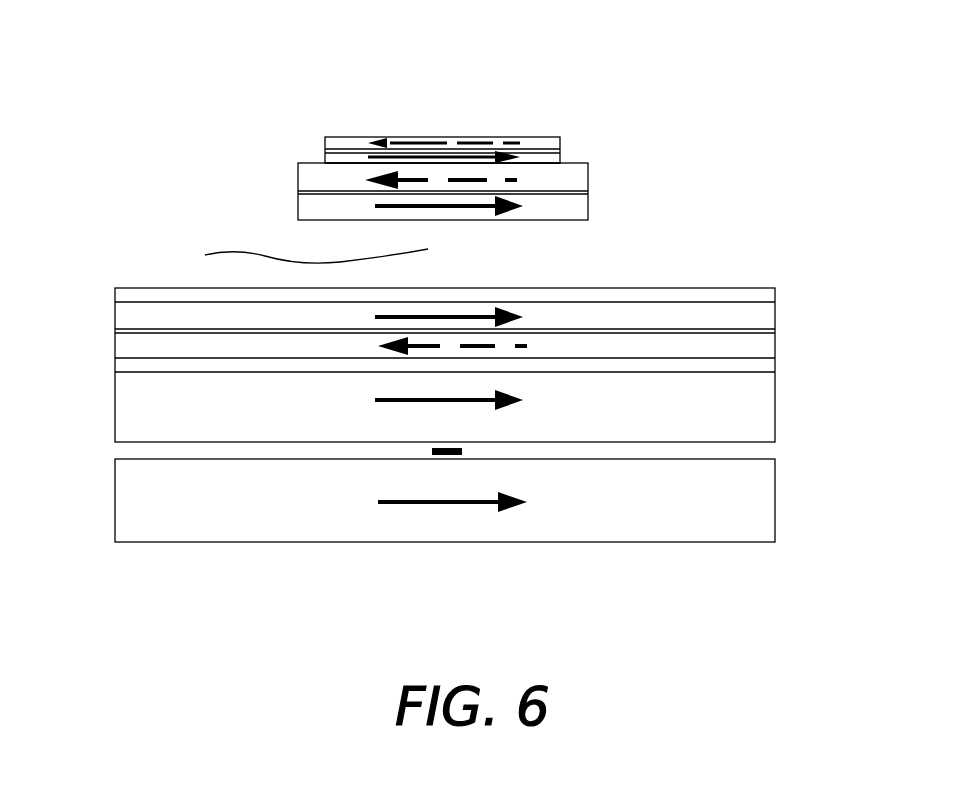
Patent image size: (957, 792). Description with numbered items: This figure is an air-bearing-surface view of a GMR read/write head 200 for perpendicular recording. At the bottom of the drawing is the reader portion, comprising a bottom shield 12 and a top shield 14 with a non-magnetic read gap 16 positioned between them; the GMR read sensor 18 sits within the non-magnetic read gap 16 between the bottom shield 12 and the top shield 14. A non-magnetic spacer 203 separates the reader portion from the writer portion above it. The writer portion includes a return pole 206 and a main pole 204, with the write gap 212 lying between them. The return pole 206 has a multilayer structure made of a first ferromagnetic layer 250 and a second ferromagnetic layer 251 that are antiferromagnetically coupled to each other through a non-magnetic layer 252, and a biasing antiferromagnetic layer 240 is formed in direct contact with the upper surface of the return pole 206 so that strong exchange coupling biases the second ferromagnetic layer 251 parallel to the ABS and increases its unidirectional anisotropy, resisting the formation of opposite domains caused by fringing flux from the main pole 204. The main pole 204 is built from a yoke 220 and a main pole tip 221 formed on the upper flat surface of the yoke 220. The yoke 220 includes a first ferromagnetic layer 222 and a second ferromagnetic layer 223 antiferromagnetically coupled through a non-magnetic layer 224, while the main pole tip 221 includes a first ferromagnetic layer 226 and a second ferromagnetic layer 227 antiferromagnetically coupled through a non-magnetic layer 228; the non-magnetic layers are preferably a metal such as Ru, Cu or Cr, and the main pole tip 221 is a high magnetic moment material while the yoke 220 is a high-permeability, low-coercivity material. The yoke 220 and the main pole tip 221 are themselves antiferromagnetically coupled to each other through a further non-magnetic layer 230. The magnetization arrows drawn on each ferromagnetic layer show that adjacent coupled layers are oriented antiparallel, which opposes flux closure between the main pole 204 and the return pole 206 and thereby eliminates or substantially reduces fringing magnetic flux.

The GMR read/write head 200 is at (784, 115).
The main pole 204 is at (677, 133).
The main pole tip 221 is at (600, 135).
The yoke 220 is at (600, 163).
The second ferromagnetic layer 227 is at (560, 145).
The non-magnetic layer 230 is at (337, 150).
The first ferromagnetic layer 226 is at (331, 158).
The non-magnetic layer 228 is at (533, 165).
The second ferromagnetic layer 223 is at (317, 178).
The non-magnetic layer 224 is at (353, 192).
The first ferromagnetic layer 222 is at (305, 203).
The write gap 212 is at (292, 254).
The return pole 206 is at (793, 300).
The biasing antiferromagnetic layer 240 is at (723, 295).
The second ferromagnetic layer 251 is at (145, 315).
The non-magnetic layer 252 is at (735, 330).
The first ferromagnetic layer 250 is at (145, 345).
The non-magnetic spacer 203 is at (130, 364).
The top shield 14 is at (120, 401).
The non-magnetic read gap 16 is at (772, 449).
The bottom shield 12 is at (132, 503).
The GMR read sensor 18 is at (432, 452).